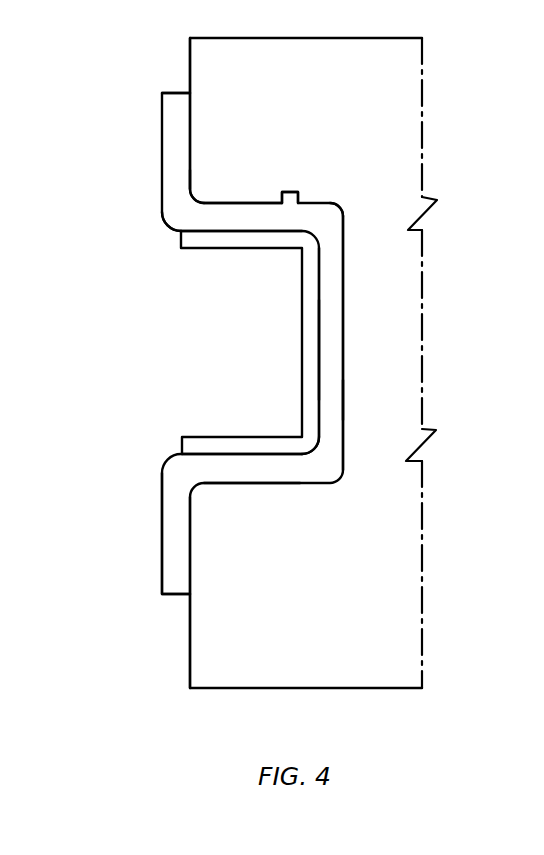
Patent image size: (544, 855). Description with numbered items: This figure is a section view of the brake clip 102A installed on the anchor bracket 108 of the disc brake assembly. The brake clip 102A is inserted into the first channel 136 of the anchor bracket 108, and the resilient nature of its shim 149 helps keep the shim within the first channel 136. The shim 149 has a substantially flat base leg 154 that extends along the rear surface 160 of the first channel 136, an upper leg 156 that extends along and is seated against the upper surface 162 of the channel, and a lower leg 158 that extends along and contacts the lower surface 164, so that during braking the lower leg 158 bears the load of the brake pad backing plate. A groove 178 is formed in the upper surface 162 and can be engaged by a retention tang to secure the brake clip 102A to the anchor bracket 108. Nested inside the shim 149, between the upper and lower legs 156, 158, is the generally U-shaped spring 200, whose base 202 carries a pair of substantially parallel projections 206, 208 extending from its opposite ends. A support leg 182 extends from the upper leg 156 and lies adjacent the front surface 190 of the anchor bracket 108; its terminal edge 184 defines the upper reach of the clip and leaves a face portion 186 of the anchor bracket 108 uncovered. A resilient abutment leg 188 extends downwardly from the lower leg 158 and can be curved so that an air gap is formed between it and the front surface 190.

The brake clip 102A is at (153, 243).
The anchor bracket 108 is at (397, 108).
The first channel 136 is at (341, 197).
The resilient shim 149 is at (356, 276).
The base leg 154 is at (333, 353).
The upper leg 156 is at (267, 213).
The lower leg 158 is at (243, 477).
The rear surface 160 is at (341, 394).
The upper surface 162 is at (223, 207).
The lower surface 164 is at (292, 482).
The groove 178 is at (297, 192).
The support leg 182 is at (162, 122).
The terminal edge 184 is at (177, 93).
The face portion 186 is at (198, 49).
The resilient abutment leg 188 is at (162, 533).
The front surface 190 is at (190, 640).
The spring 200 is at (292, 348).
The base 202 is at (308, 311).
The projection 206 is at (222, 240).
The projection 208 is at (262, 440).